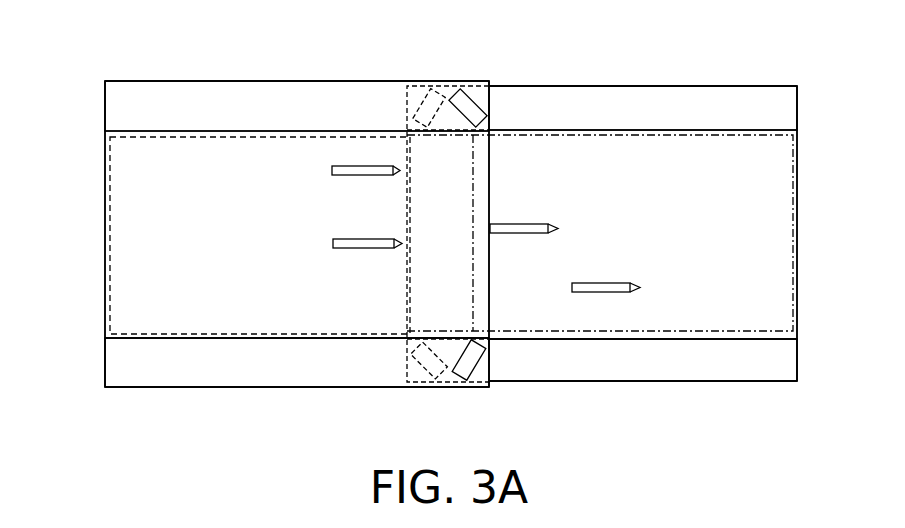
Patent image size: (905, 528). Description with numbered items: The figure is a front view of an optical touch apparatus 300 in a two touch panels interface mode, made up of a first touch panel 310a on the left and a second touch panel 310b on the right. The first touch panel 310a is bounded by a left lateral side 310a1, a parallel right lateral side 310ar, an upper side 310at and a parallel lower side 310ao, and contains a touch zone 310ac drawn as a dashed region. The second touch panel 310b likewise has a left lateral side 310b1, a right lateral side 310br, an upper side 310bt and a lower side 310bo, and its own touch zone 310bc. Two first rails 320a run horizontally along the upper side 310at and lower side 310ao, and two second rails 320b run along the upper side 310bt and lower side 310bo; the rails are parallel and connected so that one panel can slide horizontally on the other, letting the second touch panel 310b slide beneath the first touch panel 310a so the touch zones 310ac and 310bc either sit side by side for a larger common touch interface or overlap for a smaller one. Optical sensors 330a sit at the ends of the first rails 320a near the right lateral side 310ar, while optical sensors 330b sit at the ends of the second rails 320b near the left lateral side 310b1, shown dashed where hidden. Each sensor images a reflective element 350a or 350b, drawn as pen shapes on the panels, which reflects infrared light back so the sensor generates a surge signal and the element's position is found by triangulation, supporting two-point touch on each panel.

The optical touch apparatus 300 is at (81, 29).
The first touch panel 310a is at (130, 228).
The upper side of first touch panel 310at is at (157, 81).
The lower side of first touch panel 310ao is at (208, 387).
The left lateral side of first touch panel 310a1 is at (105, 308).
The touch zone of first touch panel 310ac is at (335, 338).
The right lateral side of first touch panel 310ar is at (490, 145).
The first rail 320a is at (230, 101).
The second touch panel 310b is at (765, 228).
The left lateral side of second touch panel 310b1 is at (407, 110).
The upper side of second touch panel 310bt is at (745, 86).
The lower side of second touch panel 310bo is at (702, 381).
The right lateral side of second touch panel 310br is at (797, 308).
The touch zone of second touch panel 310bc is at (547, 331).
The second rail 320b is at (668, 101).
The reflective element of first touch panel 350a is at (333, 244).
The reflective element of second touch panel 350b is at (598, 283).
The optical sensor of first touch panel 330a is at (470, 108).
The optical sensor of second touch panel 330b is at (428, 108).